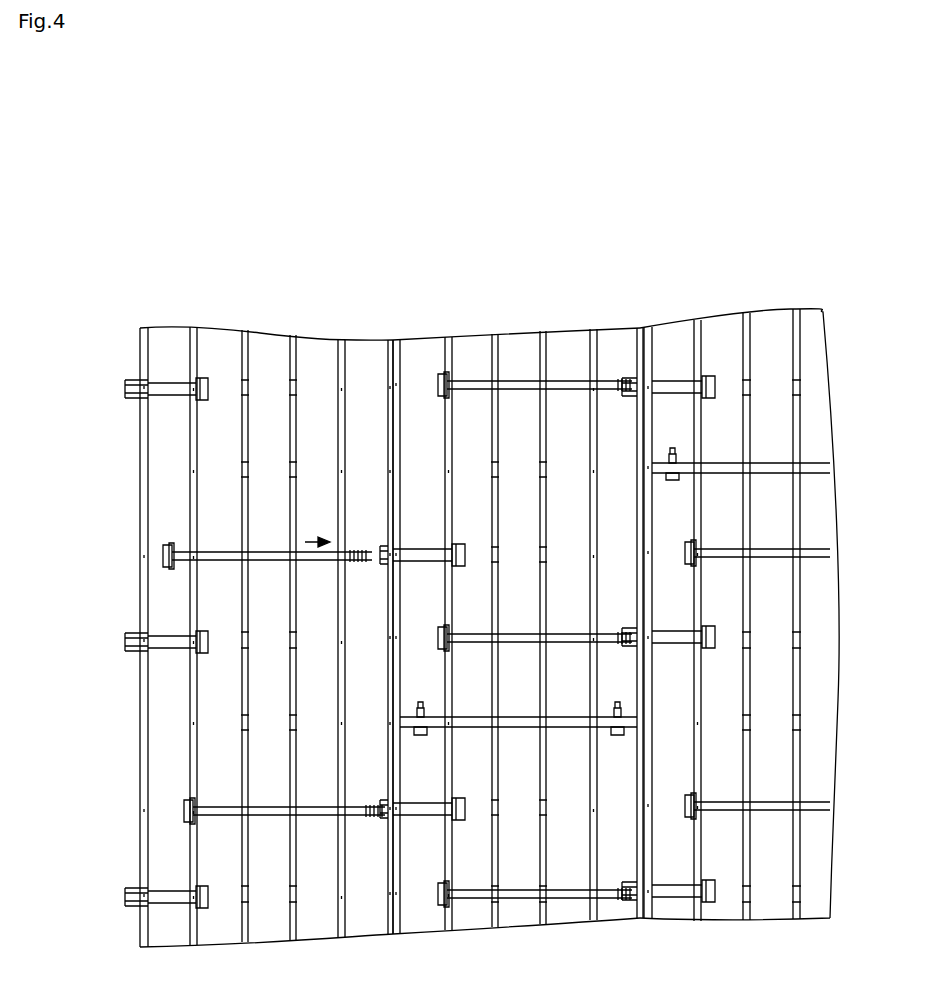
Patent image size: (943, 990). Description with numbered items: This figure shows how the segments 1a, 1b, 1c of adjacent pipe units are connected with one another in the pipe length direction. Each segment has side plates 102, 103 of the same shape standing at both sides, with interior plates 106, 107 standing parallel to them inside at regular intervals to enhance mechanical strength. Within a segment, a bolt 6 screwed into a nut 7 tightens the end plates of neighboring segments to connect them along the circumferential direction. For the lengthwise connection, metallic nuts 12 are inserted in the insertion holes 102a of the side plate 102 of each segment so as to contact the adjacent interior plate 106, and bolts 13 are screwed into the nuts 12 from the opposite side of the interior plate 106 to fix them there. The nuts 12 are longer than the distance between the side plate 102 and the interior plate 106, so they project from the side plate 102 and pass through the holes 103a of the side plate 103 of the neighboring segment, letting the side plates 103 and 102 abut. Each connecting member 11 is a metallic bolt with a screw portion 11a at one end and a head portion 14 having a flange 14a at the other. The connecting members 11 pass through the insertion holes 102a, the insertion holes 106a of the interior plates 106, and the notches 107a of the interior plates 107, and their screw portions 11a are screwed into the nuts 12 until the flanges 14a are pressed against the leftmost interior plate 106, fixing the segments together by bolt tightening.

The segment 1a is at (218, 322).
The segment 1b is at (518, 320).
The segment 1c is at (717, 300).
The bolt 6 is at (418, 735).
The nut 7 is at (424, 712).
The connecting member 11 is at (268, 551).
The screw portion 11a is at (358, 550).
The nut 12 is at (160, 398).
The bolt 13 is at (206, 378).
The head portion 14 is at (167, 545).
The flange 14a is at (172, 570).
The side plate 102 is at (144, 328).
The insertion hole 102a is at (140, 362).
The side plate 103 is at (390, 340).
The hole 103a is at (388, 380).
The interior plate 106 is at (193, 327).
The insertion hole 106a is at (197, 398).
The interior plate 107 is at (245, 330).
The notch 107a is at (248, 394).